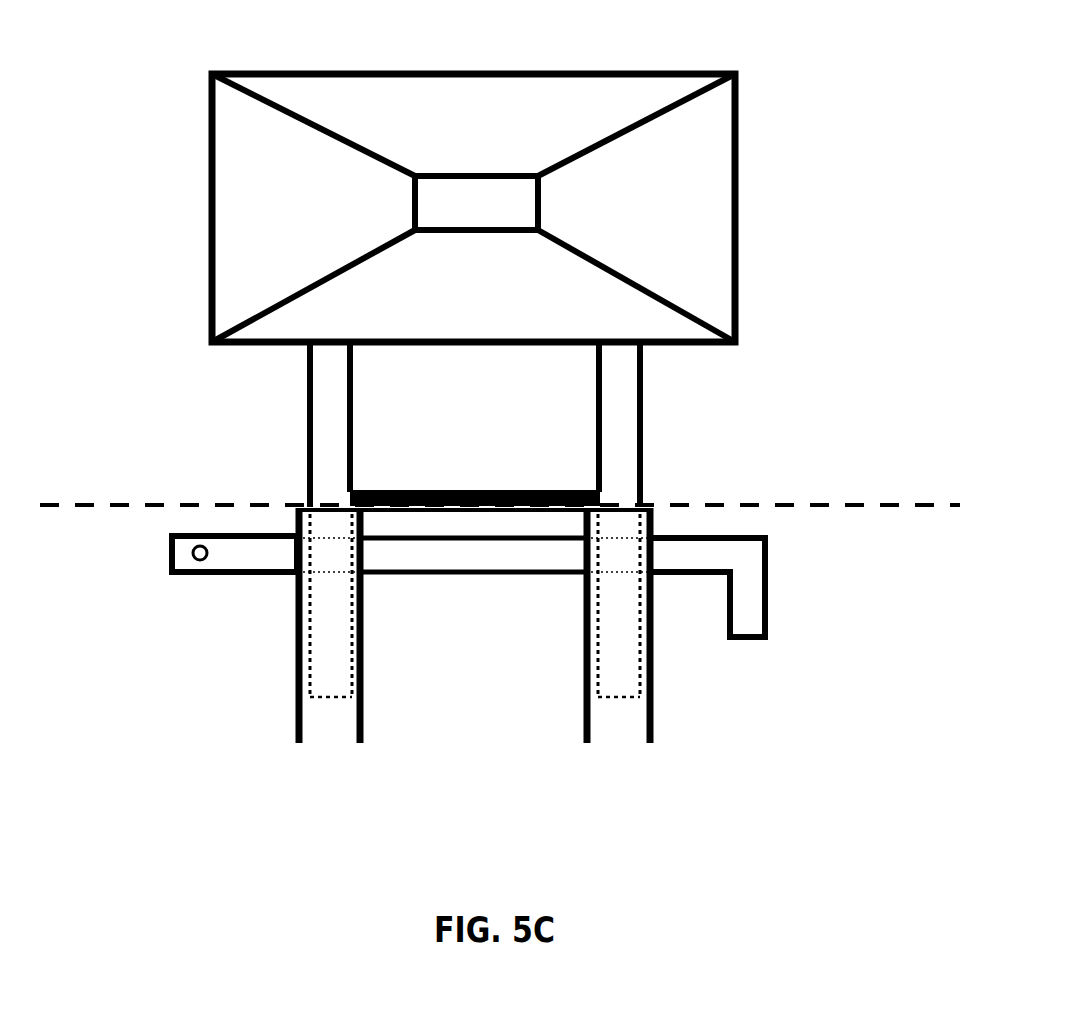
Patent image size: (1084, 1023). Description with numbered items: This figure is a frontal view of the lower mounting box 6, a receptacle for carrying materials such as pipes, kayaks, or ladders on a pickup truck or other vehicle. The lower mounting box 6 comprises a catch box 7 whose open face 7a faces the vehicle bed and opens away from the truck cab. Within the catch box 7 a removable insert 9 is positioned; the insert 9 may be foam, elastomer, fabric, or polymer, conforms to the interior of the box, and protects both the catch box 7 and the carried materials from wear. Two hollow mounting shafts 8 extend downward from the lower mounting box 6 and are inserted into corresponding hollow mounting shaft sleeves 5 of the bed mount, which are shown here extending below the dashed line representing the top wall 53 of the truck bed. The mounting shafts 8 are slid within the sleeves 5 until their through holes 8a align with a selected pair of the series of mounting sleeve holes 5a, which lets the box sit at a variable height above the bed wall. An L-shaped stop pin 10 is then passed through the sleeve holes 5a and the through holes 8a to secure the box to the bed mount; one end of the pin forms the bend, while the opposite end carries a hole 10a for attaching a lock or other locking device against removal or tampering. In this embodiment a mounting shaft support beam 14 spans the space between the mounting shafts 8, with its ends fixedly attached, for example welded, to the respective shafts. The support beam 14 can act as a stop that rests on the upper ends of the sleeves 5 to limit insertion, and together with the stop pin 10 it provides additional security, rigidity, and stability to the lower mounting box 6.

The mounting shaft sleeves 5 is at (474, 659).
The mounting sleeve holes 5a is at (378, 580).
The lower mounting box 6 is at (434, 188).
The catch box 7 is at (477, 208).
The open face 7a is at (680, 262).
The hollow mounting shafts 8 is at (305, 395).
The through holes 8a is at (294, 586).
The removable insert 9 is at (430, 199).
The L-shaped stop pin 10 is at (697, 553).
The hole 10a is at (200, 560).
The mounting shaft support beam 14 is at (448, 490).
The top wall 53 is at (822, 508).